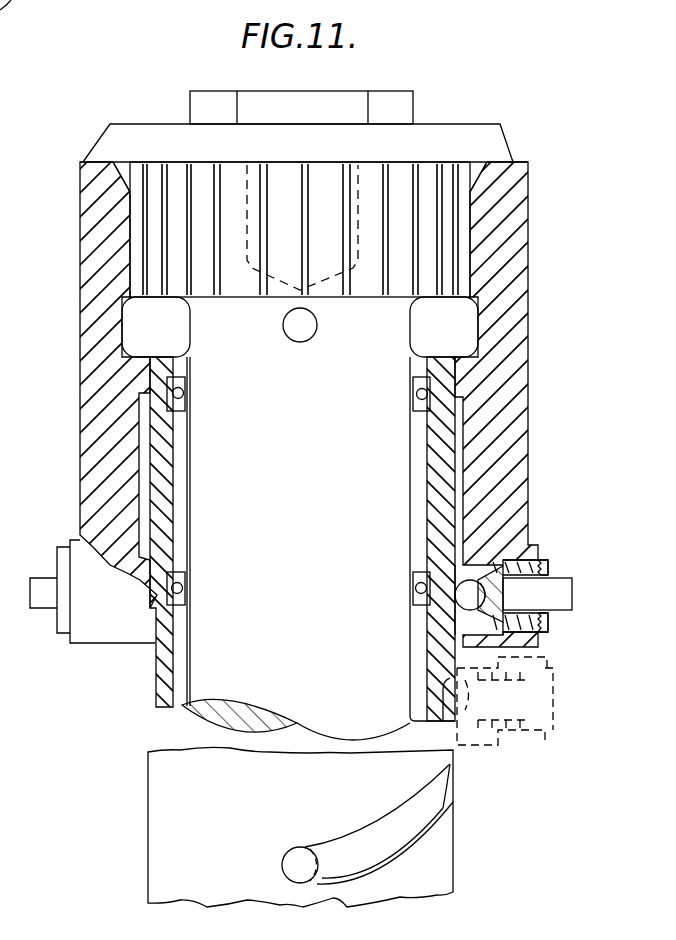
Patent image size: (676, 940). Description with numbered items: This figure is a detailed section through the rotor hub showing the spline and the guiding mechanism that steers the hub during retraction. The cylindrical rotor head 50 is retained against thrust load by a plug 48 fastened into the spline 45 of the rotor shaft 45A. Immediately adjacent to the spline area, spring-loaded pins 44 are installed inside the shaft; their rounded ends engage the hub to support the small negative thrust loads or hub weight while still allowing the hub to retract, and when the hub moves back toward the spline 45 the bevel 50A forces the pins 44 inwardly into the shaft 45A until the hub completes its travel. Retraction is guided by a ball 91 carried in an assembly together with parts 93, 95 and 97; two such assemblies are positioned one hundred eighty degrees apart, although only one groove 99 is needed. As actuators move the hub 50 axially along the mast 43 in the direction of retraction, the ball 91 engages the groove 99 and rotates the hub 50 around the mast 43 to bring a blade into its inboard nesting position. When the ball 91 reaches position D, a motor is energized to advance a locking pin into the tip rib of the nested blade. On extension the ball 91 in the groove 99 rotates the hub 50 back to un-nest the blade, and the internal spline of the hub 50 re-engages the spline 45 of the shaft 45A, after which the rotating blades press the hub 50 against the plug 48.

The plug 48 is at (455, 133).
The bevel 50A is at (130, 162).
The spline 45 is at (155, 205).
The rotor head 50 is at (92, 402).
The pin 44 is at (316, 334).
The mast 43 is at (165, 657).
The rotor shaft 45A is at (217, 715).
The assembly component 95 is at (40, 583).
The assembly component 93 is at (547, 560).
The assembly component 97 is at (540, 637).
The ball 91 is at (460, 603).
The groove 99 is at (445, 722).
The position D is at (292, 862).